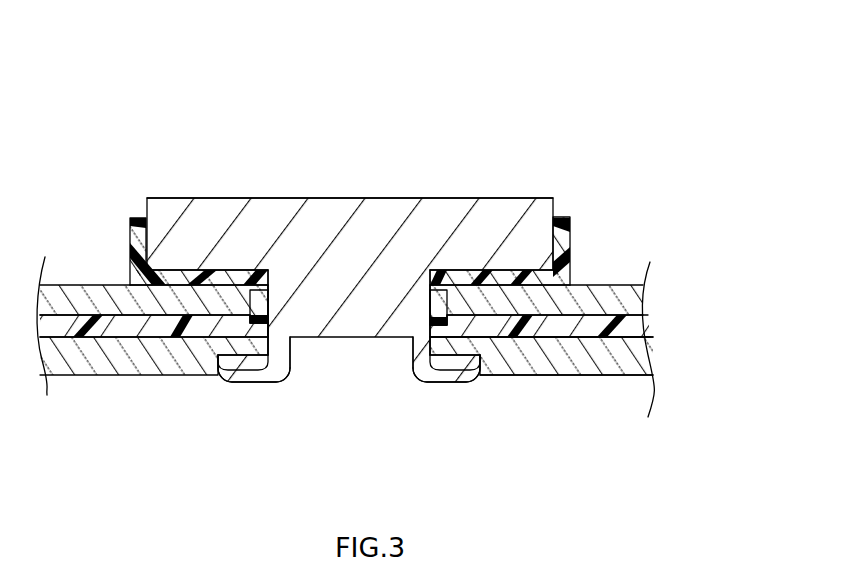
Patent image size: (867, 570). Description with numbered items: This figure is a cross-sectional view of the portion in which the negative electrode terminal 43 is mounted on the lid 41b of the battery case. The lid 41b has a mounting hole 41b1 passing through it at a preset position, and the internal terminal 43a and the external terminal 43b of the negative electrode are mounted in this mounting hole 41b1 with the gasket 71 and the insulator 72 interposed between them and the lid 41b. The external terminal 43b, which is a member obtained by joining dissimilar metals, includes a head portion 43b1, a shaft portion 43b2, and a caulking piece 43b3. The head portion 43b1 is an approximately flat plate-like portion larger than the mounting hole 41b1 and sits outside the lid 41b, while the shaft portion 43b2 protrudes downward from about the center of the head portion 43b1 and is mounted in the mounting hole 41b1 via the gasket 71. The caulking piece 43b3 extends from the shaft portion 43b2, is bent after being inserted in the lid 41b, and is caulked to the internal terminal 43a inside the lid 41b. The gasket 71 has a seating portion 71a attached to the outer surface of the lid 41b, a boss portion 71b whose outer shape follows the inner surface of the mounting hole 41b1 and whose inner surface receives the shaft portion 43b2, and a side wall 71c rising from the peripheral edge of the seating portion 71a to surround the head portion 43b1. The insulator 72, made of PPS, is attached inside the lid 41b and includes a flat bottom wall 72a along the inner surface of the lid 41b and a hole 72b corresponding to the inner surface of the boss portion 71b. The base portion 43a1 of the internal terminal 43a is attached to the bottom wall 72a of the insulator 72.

The negative electrode terminal 43 is at (547, 60).
The internal terminal 43a is at (630, 353).
The base portion 43a1 is at (610, 377).
The external terminal 43b is at (483, 188).
The head portion 43b1 is at (382, 198).
The shaft portion 43b2 is at (449, 300).
The caulking piece 43b3 is at (440, 379).
The lid 41b is at (630, 296).
The mounting hole 41b1 is at (272, 293).
The gasket 71 is at (121, 242).
The seating portion 71a is at (507, 270).
The boss portion 71b is at (270, 312).
The side wall 71c is at (553, 247).
The insulator 72 is at (630, 329).
The bottom wall 72a is at (547, 337).
The hole 72b is at (264, 330).